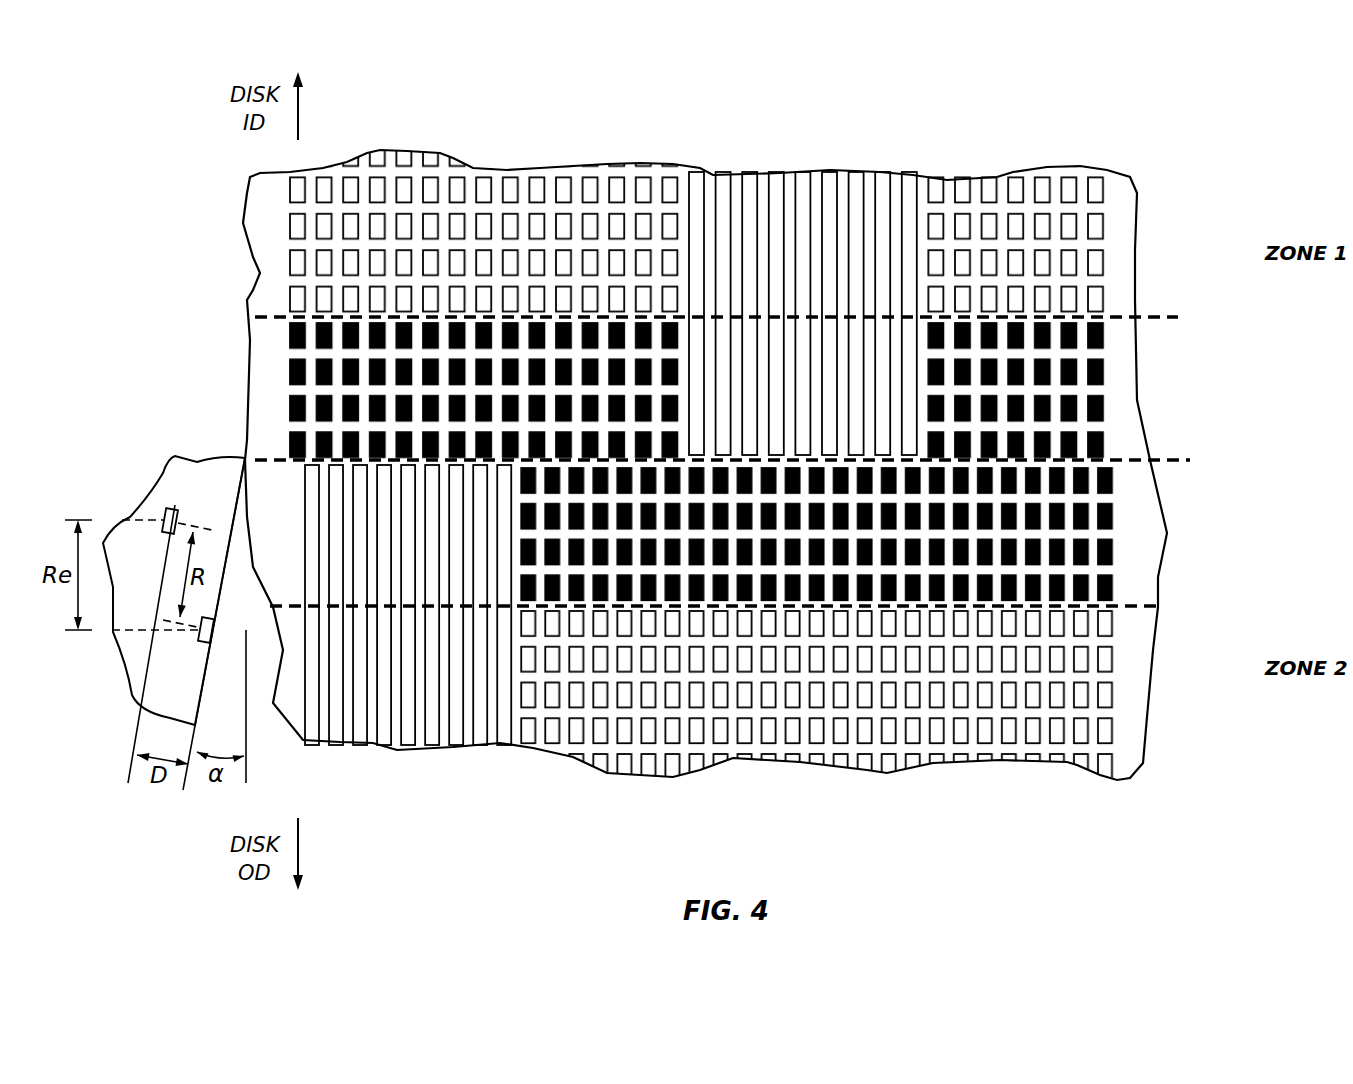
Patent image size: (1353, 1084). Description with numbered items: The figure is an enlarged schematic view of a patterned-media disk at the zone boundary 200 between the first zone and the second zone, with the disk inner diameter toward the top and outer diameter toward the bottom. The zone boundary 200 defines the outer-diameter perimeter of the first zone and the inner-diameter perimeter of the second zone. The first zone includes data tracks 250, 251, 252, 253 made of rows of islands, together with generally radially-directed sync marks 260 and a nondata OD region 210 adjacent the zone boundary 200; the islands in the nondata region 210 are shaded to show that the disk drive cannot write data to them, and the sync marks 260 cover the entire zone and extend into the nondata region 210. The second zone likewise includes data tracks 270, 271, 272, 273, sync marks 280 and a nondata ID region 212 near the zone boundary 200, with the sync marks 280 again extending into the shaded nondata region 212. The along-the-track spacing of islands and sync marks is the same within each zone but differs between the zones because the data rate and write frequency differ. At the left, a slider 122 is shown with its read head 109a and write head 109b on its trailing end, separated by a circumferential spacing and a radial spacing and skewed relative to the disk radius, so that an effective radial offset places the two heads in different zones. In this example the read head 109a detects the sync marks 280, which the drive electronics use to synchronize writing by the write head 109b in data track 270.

The slider 122 is at (163, 472).
The read head 109a is at (172, 508).
The write head 109b is at (205, 643).
The zone boundary 200 is at (1150, 462).
The nondata OD region 210 is at (1230, 312).
The nondata ID region 212 is at (1230, 462).
The data track 250 is at (1103, 190).
The data track 251 is at (1103, 226).
The data track 252 is at (1103, 262).
The data track 253 is at (1103, 298).
The sync marks 260 is at (920, 163).
The data track 270 is at (1112, 622).
The data track 271 is at (1112, 658).
The data track 272 is at (1112, 694).
The data track 273 is at (1112, 730).
The sync marks 280 is at (510, 757).